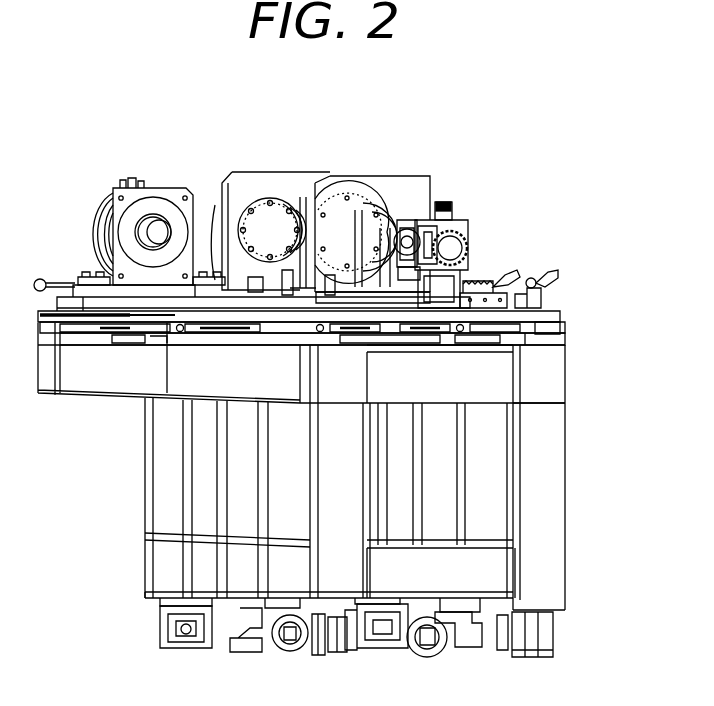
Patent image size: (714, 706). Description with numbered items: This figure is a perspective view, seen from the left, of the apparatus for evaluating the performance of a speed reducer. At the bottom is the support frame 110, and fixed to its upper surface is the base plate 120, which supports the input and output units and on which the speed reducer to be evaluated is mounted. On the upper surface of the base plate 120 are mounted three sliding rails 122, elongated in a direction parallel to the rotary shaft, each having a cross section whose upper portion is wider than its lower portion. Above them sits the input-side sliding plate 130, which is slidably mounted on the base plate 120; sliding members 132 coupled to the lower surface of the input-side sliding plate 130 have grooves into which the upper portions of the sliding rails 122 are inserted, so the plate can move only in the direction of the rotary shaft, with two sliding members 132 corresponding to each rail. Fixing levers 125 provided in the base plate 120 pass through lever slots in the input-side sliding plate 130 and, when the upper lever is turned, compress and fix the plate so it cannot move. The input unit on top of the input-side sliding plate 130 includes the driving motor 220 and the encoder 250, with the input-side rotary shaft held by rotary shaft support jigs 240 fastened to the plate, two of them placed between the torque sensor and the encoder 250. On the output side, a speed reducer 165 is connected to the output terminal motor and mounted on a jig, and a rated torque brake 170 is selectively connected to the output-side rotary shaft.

The support frame 110 is at (220, 380).
The base plate 120 is at (213, 332).
The sliding rail 122 is at (528, 340).
The fixing lever 125 is at (540, 282).
The input-side sliding plate 130 is at (560, 312).
The sliding member 132 is at (500, 357).
The speed reducer 165 is at (247, 182).
The rated torque brake 170 is at (90, 208).
The driving motor 220 is at (448, 242).
The rotary shaft support jig 240 is at (398, 210).
The encoder 250 is at (373, 203).